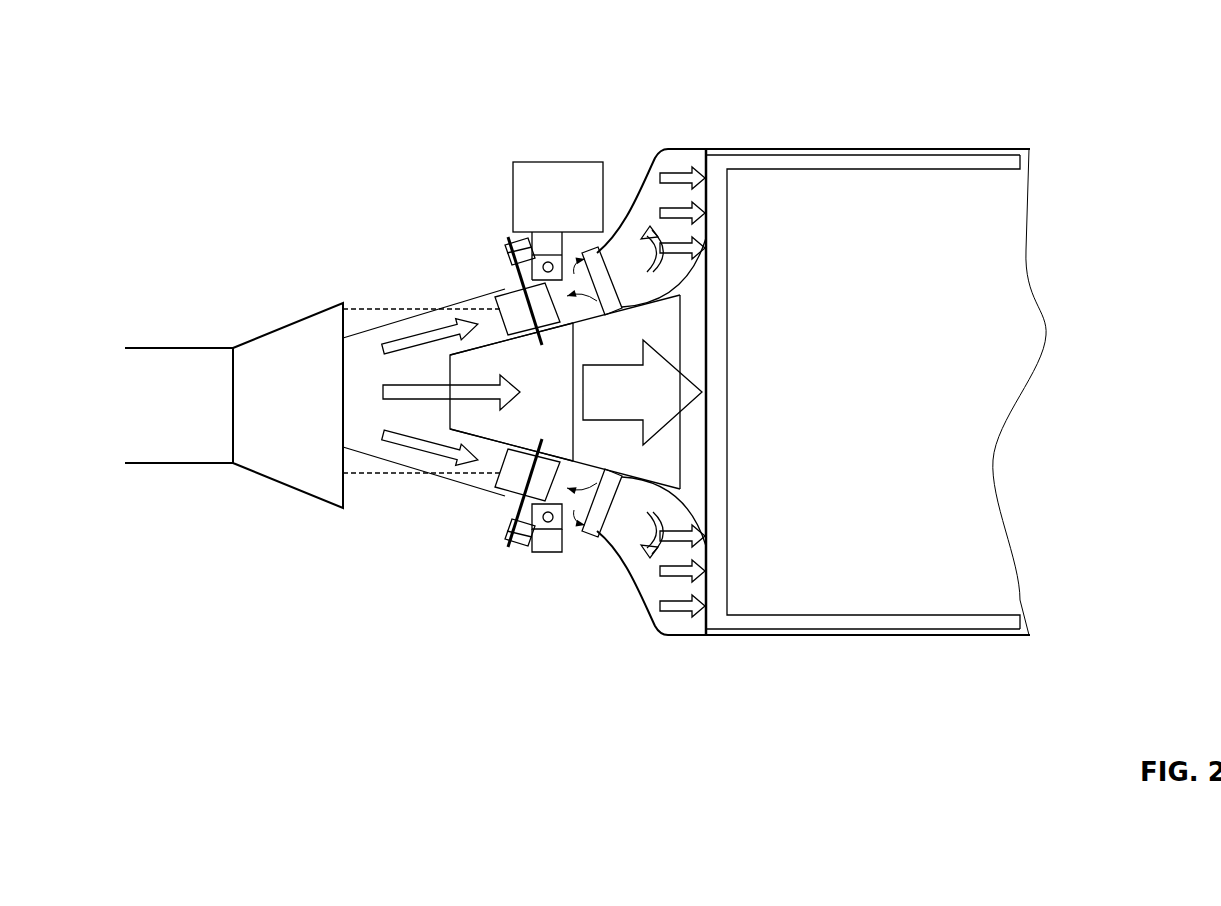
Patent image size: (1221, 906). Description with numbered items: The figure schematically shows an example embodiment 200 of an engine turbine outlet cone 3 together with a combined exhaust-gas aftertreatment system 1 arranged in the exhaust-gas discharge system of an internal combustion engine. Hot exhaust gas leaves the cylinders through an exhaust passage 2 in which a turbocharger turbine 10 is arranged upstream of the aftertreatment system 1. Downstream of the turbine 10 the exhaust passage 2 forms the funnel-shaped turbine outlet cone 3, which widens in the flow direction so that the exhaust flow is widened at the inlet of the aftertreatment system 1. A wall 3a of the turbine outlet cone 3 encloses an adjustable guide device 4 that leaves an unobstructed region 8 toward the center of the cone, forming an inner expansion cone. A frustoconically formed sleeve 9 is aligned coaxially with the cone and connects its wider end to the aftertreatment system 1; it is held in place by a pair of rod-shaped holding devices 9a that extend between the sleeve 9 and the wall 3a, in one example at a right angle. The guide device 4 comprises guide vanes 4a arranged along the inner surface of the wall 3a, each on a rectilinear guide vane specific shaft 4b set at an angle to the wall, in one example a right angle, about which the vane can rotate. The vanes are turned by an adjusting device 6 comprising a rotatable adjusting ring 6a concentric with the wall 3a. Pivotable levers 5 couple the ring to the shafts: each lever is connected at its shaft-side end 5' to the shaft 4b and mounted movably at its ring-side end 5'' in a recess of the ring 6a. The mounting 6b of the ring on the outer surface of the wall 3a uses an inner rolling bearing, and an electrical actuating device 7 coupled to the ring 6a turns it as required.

The combined exhaust-gas aftertreatment system 1 is at (875, 392).
The exhaust passage 2 is at (179, 405).
The turbine outlet cone 3 is at (632, 622).
The wall 3a is at (468, 492).
The adjustable guide device 4 is at (473, 286).
The guide vanes 4a is at (492, 304).
The guide vane specific shaft 4b is at (515, 280).
The pivotable levers 5 is at (487, 530).
The shaft-side end 5' is at (491, 215).
The ring-side end 5'' is at (488, 199).
The adjusting device 6 is at (457, 258).
The adjusting ring 6a is at (548, 548).
The mounting 6b is at (562, 525).
The electrical actuating device 7 is at (560, 180).
The unobstructed region 8 is at (542, 392).
The frustoconically formed sleeve 9 is at (718, 168).
The holding devices 9a is at (605, 250).
The turbine 10 is at (288, 405).
The example embodiment 200 is at (1024, 70).